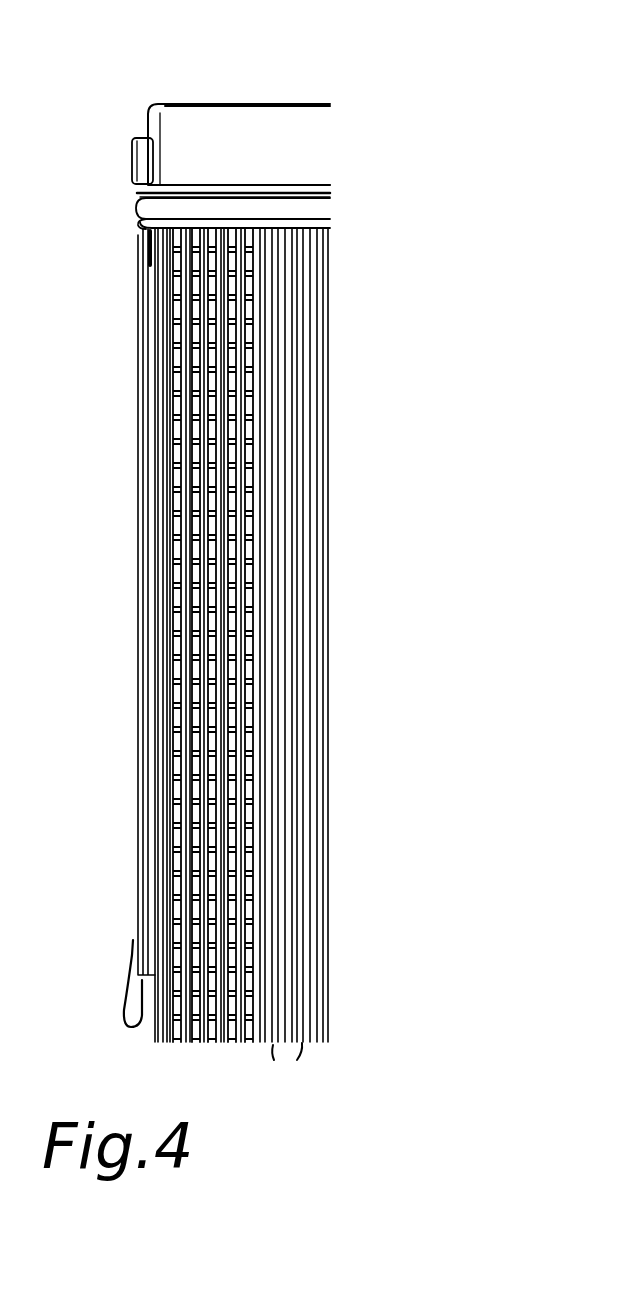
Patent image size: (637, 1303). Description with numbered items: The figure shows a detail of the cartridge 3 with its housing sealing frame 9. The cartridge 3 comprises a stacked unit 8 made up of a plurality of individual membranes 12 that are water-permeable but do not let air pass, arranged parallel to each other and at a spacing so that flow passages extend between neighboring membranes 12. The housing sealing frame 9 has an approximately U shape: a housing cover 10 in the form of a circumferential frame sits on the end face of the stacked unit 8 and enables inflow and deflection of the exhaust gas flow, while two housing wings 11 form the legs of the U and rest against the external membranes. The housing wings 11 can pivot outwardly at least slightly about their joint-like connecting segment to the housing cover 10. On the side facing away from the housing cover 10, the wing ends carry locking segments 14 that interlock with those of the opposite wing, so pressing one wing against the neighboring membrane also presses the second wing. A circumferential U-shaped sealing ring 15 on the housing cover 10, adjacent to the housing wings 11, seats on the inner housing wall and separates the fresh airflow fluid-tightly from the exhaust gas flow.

The cartridge 3 is at (102, 88).
The stacked unit 8 is at (330, 428).
The housing sealing frame 9 is at (227, 97).
The housing cover 10 is at (267, 105).
The housing wing 11 is at (148, 467).
The membrane 12 is at (289, 1073).
The locking segment 14 is at (123, 1015).
The sealing ring 15 is at (135, 210).